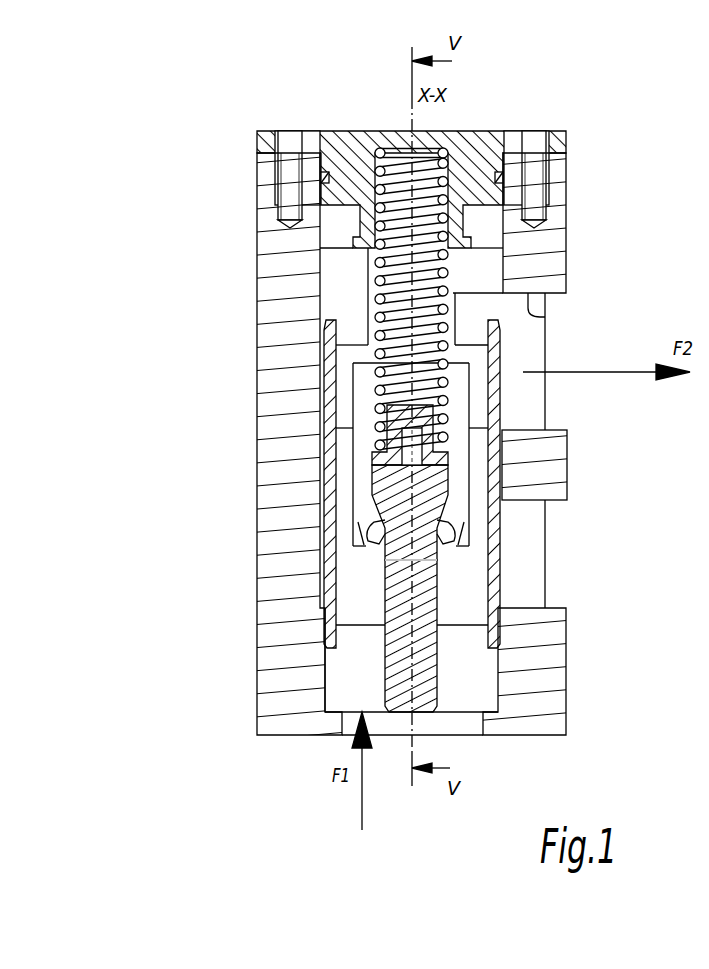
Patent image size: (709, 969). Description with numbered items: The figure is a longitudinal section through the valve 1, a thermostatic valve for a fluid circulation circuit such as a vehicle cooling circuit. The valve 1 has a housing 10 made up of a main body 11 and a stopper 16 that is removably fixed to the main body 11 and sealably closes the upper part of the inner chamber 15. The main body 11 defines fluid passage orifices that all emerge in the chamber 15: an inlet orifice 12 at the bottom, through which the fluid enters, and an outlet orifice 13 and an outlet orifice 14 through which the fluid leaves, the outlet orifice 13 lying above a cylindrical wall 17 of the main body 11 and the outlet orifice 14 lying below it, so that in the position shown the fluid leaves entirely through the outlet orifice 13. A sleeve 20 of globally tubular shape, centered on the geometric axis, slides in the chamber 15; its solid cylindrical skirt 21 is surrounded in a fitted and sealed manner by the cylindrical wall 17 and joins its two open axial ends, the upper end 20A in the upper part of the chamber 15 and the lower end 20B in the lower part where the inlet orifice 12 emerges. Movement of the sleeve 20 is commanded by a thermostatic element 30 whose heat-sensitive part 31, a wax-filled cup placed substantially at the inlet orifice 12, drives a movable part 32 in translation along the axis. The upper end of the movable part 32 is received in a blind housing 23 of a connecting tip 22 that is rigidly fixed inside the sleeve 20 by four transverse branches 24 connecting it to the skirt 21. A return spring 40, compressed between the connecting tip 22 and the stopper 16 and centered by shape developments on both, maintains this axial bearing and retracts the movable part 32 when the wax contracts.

The valve 1 is at (236, 129).
The housing 10 is at (247, 712).
The main body 11 is at (278, 365).
The inlet orifice 12 is at (470, 735).
The outlet orifice 13 is at (547, 318).
The outlet orifice 14 is at (528, 607).
The inner chamber 15 is at (411, 660).
The stopper 16 is at (342, 151).
The cylindrical wall 17 is at (543, 453).
The sleeve 20 is at (310, 575).
The upper axial end 20A is at (497, 318).
The lower axial end 20B is at (490, 650).
The cylindrical skirt 21 is at (333, 518).
The connecting tip 22 is at (387, 410).
The blind housing 23 is at (372, 464).
The branches 24 is at (365, 378).
The thermostatic element 30 is at (652, 505).
The heat-sensitive part 31 is at (440, 583).
The movable part 32 is at (443, 457).
The return spring 40 is at (358, 265).